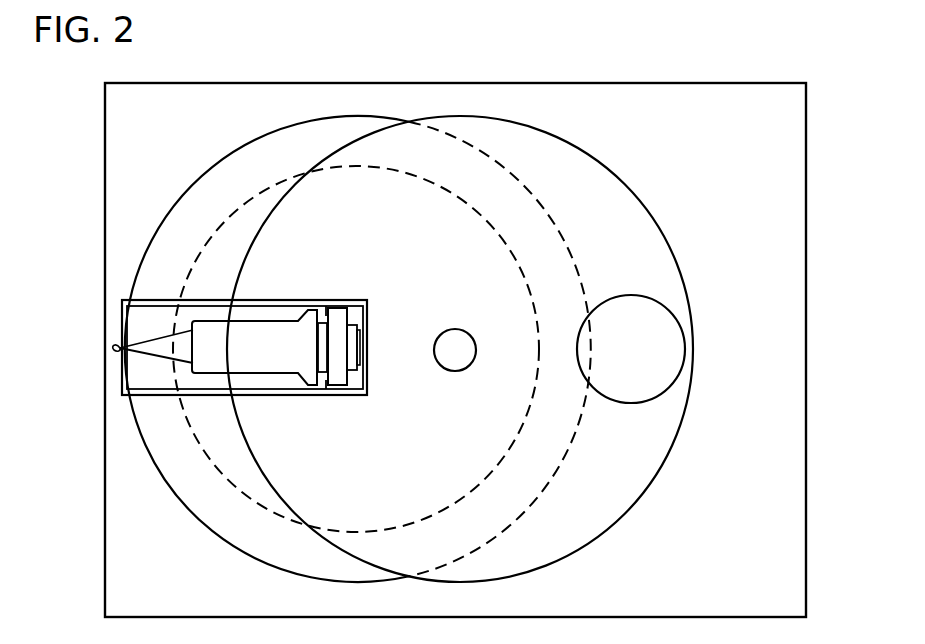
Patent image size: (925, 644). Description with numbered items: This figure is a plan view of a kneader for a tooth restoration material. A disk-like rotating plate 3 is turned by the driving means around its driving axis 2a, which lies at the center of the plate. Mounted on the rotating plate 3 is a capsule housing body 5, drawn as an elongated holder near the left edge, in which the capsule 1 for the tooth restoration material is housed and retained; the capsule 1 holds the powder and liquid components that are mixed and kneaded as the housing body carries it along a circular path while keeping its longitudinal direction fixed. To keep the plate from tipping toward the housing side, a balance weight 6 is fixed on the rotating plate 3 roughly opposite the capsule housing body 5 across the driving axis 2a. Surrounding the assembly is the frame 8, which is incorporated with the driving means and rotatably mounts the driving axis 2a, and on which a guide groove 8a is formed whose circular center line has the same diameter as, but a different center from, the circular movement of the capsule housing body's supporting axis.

The capsule for a tooth restoration material 1 is at (255, 352).
The driving axis 2a is at (455, 350).
The rotating plate 3 is at (538, 152).
The capsule housing body 5 is at (152, 297).
The balance weight 6 is at (667, 350).
The frame 8 is at (676, 137).
The guide groove 8a is at (322, 138).